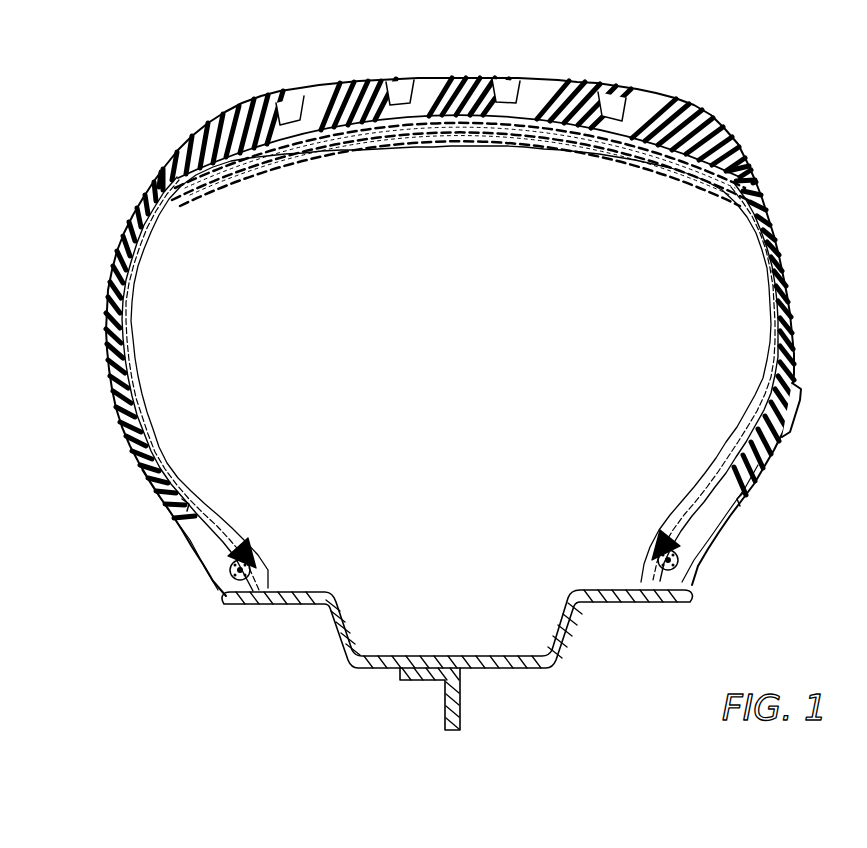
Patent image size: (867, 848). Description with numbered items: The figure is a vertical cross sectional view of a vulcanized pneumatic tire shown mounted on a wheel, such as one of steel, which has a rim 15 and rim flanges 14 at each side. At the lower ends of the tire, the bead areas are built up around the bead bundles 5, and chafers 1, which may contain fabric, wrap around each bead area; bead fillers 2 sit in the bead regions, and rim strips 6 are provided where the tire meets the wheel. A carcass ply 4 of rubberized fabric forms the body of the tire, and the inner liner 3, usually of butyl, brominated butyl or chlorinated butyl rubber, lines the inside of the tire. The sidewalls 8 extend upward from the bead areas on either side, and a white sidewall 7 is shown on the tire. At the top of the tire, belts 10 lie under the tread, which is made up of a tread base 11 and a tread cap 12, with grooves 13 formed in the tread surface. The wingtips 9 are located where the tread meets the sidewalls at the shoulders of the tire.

The chafer 1 is at (644, 566).
The bead filler 2 is at (676, 522).
The inner liner 3 is at (688, 488).
The carcass ply 4 is at (718, 456).
The bead bundle 5 is at (690, 560).
The rim strip 6 is at (738, 500).
The white sidewall 7 is at (789, 430).
The sidewall 8 is at (792, 332).
The wingtip 9 is at (757, 192).
The belt 10 is at (718, 152).
The tread base 11 is at (556, 96).
The tread cap 12 is at (448, 96).
The groove 13 is at (404, 100).
The rim flange 14 is at (680, 588).
The rim 15 is at (560, 650).